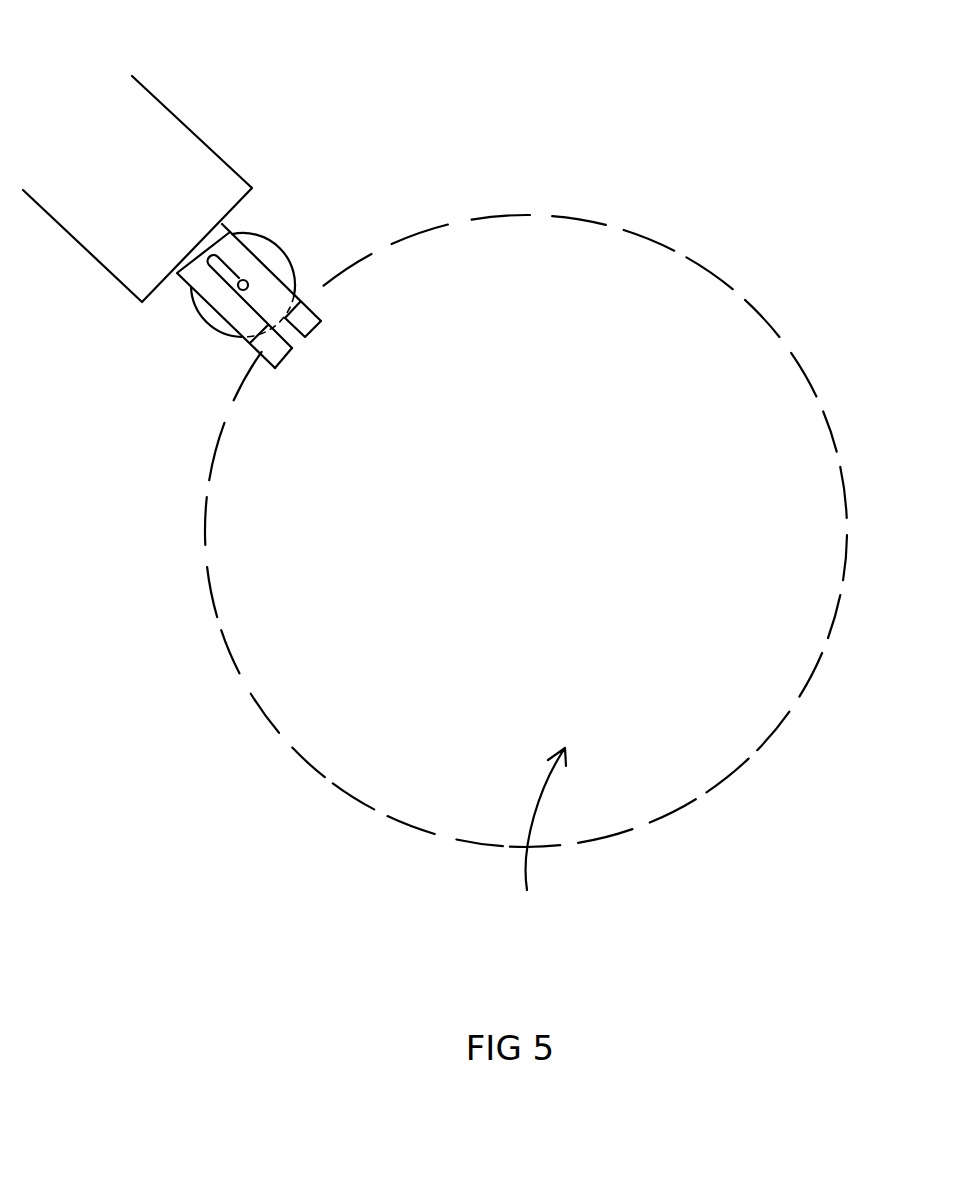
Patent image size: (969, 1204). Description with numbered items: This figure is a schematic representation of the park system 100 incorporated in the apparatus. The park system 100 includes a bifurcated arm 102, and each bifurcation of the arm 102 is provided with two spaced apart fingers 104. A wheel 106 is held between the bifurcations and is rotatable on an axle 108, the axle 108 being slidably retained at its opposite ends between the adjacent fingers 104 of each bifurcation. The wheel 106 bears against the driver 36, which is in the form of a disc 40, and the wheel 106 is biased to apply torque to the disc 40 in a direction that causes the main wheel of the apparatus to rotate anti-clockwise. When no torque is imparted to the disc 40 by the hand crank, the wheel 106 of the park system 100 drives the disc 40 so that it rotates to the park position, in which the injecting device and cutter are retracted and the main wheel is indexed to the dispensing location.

The park system 100 is at (252, 60).
The bifurcated arm 102 is at (230, 232).
The fingers 104 is at (292, 298).
The wheel 106 is at (207, 315).
The axle 108 is at (244, 283).
The disc 40 is at (584, 219).
The driver 36 is at (540, 840).